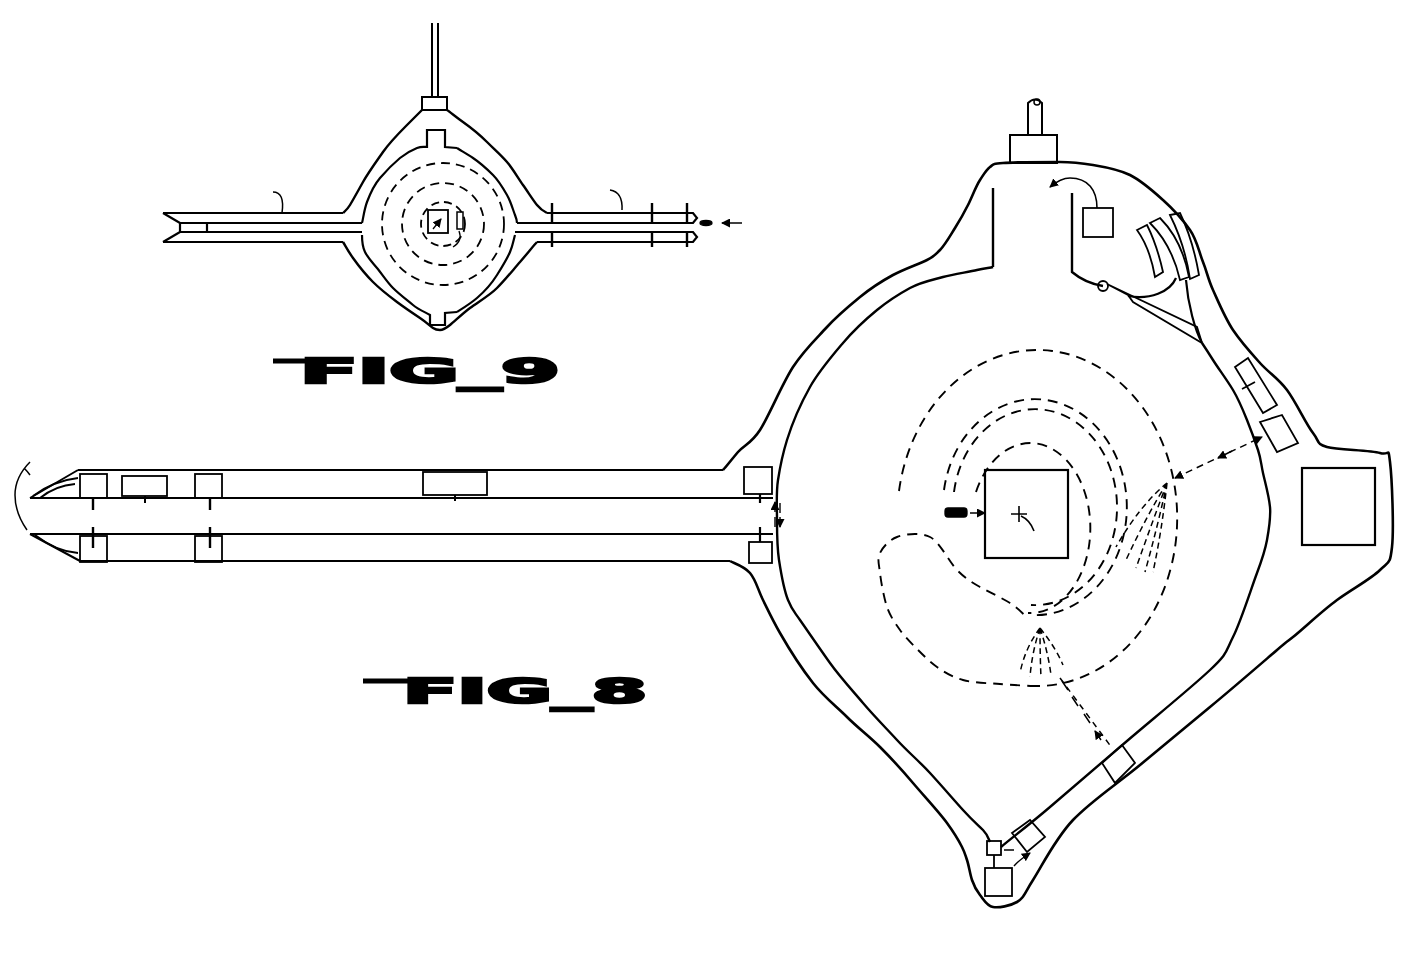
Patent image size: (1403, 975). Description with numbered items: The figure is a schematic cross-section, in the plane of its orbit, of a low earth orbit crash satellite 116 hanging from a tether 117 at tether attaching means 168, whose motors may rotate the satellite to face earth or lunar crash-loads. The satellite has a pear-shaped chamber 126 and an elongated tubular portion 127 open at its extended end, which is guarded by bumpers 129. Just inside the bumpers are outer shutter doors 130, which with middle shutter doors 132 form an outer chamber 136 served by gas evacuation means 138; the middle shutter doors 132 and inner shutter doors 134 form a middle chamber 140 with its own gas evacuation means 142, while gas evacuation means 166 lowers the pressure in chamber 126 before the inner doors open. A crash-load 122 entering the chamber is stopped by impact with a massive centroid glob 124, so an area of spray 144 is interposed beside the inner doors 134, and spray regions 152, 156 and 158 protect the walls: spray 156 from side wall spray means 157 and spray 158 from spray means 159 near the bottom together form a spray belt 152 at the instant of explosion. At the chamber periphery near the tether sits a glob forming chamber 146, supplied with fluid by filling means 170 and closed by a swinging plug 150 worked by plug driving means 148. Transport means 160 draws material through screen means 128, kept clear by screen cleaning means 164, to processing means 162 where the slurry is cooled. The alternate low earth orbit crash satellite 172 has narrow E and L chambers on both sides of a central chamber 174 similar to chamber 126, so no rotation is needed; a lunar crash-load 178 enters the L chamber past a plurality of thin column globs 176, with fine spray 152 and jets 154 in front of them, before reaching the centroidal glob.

In FIG. 8, the satellite 116 is at (720, 450).
In FIG. 8, the tether 117 is at (1044, 106).
In FIG. 8, the crash-load 122 is at (945, 513).
In FIG. 8, the centroid glob 124 is at (1046, 498).
In FIG. 8, the chamber 126 is at (889, 402).
In FIG. 8, the elongated tubular portion 127 is at (348, 470).
In FIG. 8, the screen means 128 is at (997, 841).
In FIG. 8, the bumpers 129 is at (47, 507).
In FIG. 8, the outer shutter doors 130 is at (93, 518).
In FIG. 8, the middle shutter doors 132 is at (208, 518).
In FIG. 8, the inner shutter doors 134 is at (758, 515).
In FIG. 8, the outer chamber 136 is at (173, 531).
In FIG. 8, the gas evacuation means 138 is at (144, 489).
In FIG. 8, the middle chamber 140 is at (370, 534).
In FIG. 8, the gas evacuation means 142 is at (455, 486).
In FIG. 8, the area of spray 144 is at (783, 507).
In FIG. 8, the glob forming chamber 146 is at (1057, 238).
In FIG. 8, the plug driving means 148 is at (1150, 252).
In FIG. 8, the swinging plug 150 is at (1163, 326).
In FIG. 8, the spray region 152 is at (1031, 394).
In FIG. 9, the spray region 152 is at (472, 185).
In FIG. 8, the jets 154 is at (1049, 441).
In FIG. 9, the jets 154 is at (425, 218).
In FIG. 8, the spray 156 is at (1147, 500).
In FIG. 8, the spray means 157 is at (1279, 433).
In FIG. 8, the spray 158 is at (1057, 640).
In FIG. 8, the spray means 159 is at (1097, 730).
In FIG. 8, the transport means 160 is at (1344, 550).
In FIG. 8, the processing means 162 is at (1362, 516).
In FIG. 8, the screen cleaning means 164 is at (1024, 843).
In FIG. 8, the gas evacuation means 166 is at (1256, 385).
In FIG. 8, the tether attaching means 168 is at (1033, 149).
In FIG. 8, the filling means 170 is at (1082, 207).
In FIG. 9, the low earth orbit crash satellite 172 is at (515, 152).
In FIG. 9, the central chamber 174 is at (436, 221).
In FIG. 9, the column globs 176 is at (445, 245).
In FIG. 9, the crash-load 178 is at (704, 220).